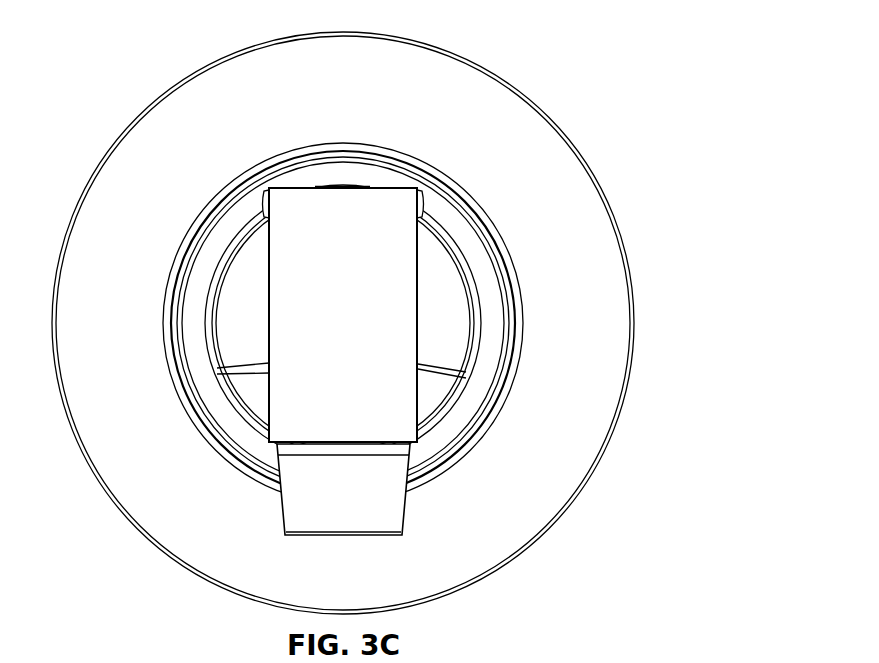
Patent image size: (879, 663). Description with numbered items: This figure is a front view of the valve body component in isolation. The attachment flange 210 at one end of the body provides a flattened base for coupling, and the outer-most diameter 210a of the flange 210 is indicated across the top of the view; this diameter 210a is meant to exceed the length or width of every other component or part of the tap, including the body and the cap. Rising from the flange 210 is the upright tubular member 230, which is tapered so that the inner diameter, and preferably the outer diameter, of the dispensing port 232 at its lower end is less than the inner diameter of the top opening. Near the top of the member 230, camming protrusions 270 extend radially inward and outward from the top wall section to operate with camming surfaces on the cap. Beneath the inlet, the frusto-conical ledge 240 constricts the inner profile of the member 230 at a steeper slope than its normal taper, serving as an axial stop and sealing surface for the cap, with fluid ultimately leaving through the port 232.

The attachment flange 210 is at (597, 394).
The outer-most diameter of flange 210a is at (666, 13).
The upright tubular member 230 is at (381, 313).
The dispensing port 232 is at (380, 537).
The frusto-conical ledge 240 is at (418, 443).
The camming protrusions 270 is at (424, 206).